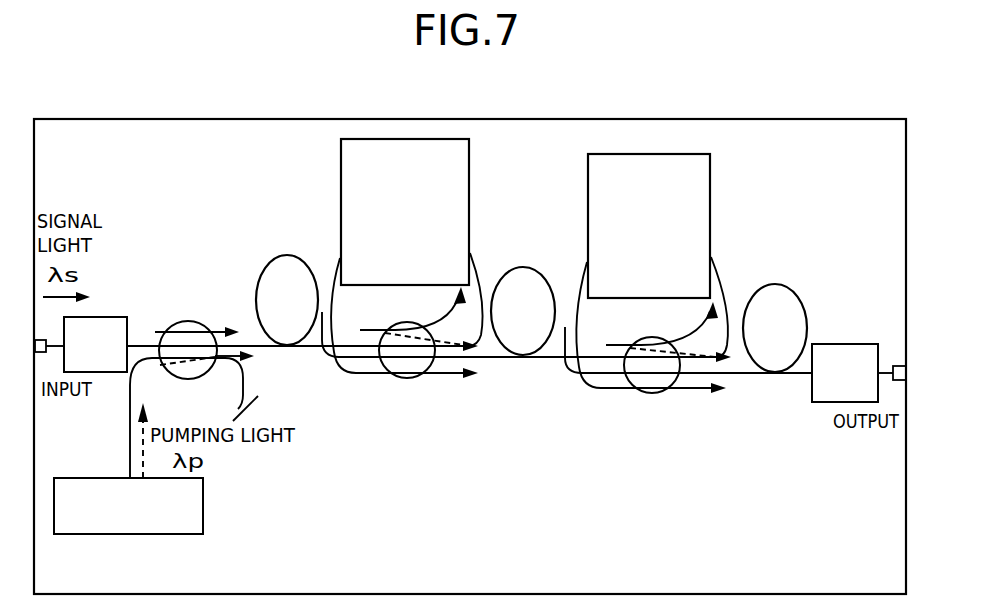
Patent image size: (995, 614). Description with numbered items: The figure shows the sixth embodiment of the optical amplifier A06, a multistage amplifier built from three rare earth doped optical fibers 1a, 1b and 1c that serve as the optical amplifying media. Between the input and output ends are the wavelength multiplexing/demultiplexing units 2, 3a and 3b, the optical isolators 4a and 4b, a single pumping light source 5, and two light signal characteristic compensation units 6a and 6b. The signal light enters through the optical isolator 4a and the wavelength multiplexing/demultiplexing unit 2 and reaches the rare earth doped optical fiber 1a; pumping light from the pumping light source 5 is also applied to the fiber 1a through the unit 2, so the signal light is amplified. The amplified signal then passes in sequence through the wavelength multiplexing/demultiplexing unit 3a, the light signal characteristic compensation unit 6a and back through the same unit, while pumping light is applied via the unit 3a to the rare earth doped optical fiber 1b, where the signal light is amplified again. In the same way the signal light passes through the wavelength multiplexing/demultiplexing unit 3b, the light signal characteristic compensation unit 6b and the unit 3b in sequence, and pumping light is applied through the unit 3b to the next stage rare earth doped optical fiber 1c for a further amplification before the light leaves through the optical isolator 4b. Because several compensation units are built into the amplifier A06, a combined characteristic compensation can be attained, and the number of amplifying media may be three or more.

The optical amplifier A06 is at (680, 119).
The rare earth doped optical fiber 1a is at (288, 256).
The rare earth doped optical fiber 1b is at (523, 267).
The rare earth doped optical fiber 1c is at (775, 284).
The wavelength multiplexing/demultiplexing unit 2 is at (190, 321).
The wavelength multiplexing/demultiplexing unit 3a is at (407, 378).
The wavelength multiplexing/demultiplexing unit 3b is at (651, 393).
The optical isolator 4a is at (99, 317).
The optical isolator 4b is at (850, 344).
The pumping light source 5 is at (203, 500).
The light signal characteristic compensation unit 6a is at (469, 172).
The light signal characteristic compensation unit 6b is at (710, 180).